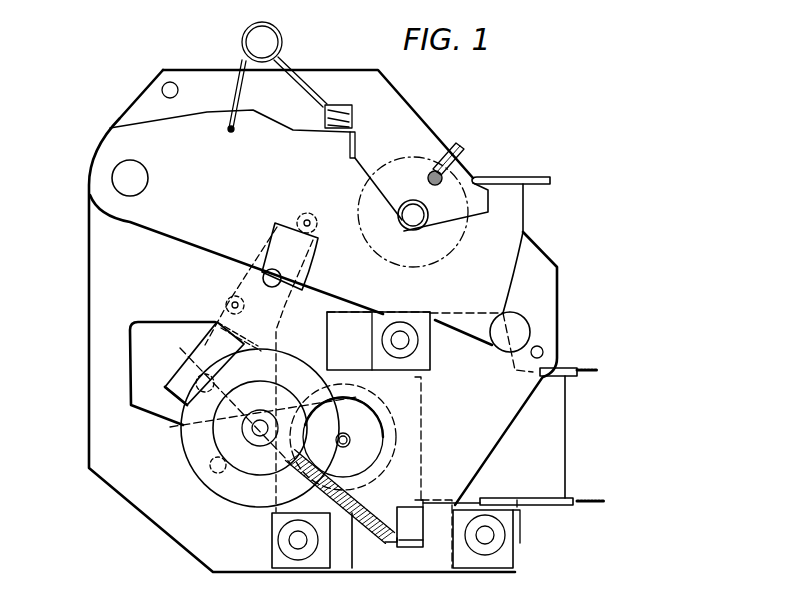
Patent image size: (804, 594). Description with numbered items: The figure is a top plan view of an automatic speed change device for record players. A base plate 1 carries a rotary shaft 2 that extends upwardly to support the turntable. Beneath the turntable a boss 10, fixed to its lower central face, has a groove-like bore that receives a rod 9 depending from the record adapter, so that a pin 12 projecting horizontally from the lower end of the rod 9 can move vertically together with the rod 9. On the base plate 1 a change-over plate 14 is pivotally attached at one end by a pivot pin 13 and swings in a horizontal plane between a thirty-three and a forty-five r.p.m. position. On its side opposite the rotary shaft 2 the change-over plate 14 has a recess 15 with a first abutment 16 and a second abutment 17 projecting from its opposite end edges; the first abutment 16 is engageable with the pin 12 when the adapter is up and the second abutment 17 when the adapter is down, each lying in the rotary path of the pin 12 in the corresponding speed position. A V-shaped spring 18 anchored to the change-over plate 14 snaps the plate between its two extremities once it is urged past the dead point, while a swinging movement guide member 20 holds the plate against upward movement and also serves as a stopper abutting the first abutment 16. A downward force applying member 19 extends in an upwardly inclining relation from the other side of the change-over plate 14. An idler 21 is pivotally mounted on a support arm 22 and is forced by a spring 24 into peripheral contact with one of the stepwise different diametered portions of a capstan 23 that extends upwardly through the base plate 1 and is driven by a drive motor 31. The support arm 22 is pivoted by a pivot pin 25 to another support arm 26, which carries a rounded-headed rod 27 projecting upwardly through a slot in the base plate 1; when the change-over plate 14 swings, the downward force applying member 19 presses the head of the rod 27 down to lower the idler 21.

The base plate 1 is at (548, 275).
The rotary shaft 2 is at (409, 226).
The rod 9 is at (441, 171).
The boss 10 is at (421, 160).
The pin 12 is at (458, 150).
The pivot pin 13 is at (138, 182).
The change-over plate 14 is at (133, 140).
The recess 15 is at (452, 215).
The first abutment 16 is at (526, 180).
The second abutment 17 is at (357, 142).
The V-shaped spring 18 is at (300, 58).
The downward force applying member 19 is at (273, 233).
The swinging movement guide member 20 is at (531, 328).
The idler 21 is at (223, 492).
The support arm 22 is at (170, 388).
The capstan 23 is at (345, 446).
The spring 24 is at (360, 497).
The pivot pin 25 is at (198, 378).
The support arm 26 is at (216, 340).
The rod 27 is at (264, 283).
The drive motor 31 is at (562, 440).